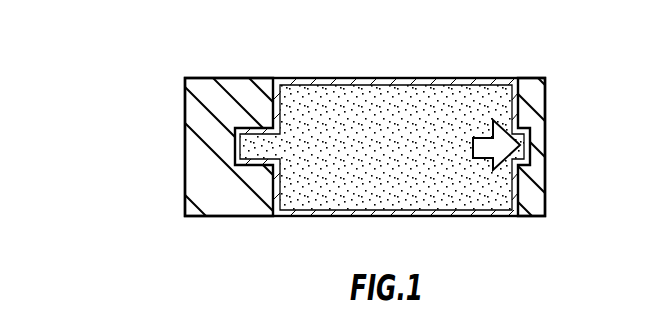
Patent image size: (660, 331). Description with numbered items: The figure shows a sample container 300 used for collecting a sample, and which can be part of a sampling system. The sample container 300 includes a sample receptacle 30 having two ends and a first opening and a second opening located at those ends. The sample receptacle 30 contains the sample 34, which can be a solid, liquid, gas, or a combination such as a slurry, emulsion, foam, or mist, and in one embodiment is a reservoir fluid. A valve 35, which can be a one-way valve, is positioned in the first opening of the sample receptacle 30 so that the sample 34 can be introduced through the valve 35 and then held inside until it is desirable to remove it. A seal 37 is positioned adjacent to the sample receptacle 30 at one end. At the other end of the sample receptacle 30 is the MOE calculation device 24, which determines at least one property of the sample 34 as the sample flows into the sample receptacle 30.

The sample container 300 is at (160, 72).
The seal 37 is at (190, 123).
The MOE calculation device 24 is at (535, 87).
The sample receptacle 30 is at (380, 78).
The sample 34 is at (332, 200).
The valve 35 is at (525, 138).